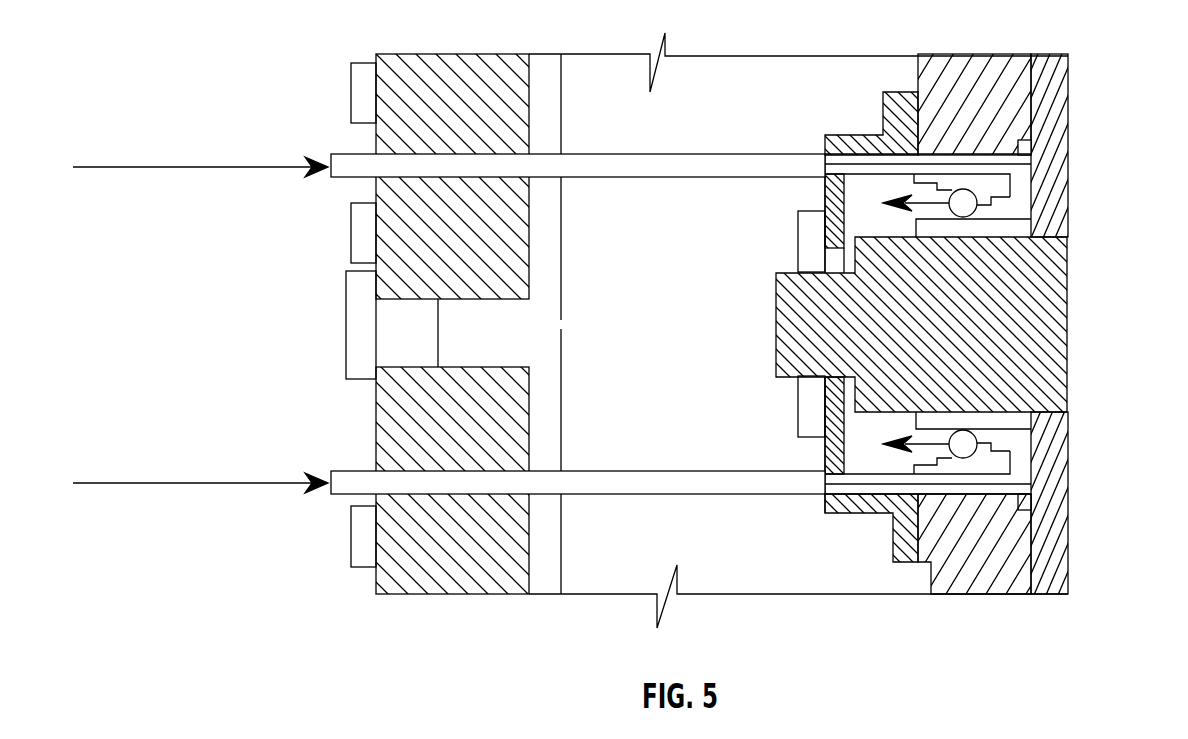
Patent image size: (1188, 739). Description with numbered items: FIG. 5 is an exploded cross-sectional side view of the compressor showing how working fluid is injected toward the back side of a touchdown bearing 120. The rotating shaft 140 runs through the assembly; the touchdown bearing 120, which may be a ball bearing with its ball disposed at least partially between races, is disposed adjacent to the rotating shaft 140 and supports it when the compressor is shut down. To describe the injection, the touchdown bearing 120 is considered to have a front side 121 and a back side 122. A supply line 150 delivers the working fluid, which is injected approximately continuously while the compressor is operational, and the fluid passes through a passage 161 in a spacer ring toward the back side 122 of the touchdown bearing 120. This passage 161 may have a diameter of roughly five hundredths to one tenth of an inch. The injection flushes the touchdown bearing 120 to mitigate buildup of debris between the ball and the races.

The touchdown bearing 120 is at (960, 189).
The front side 121 is at (949, 207).
The back side 122 is at (975, 209).
The rotating shaft 140 is at (992, 343).
The supply line 150 is at (358, 157).
The passage 161 is at (1020, 171).